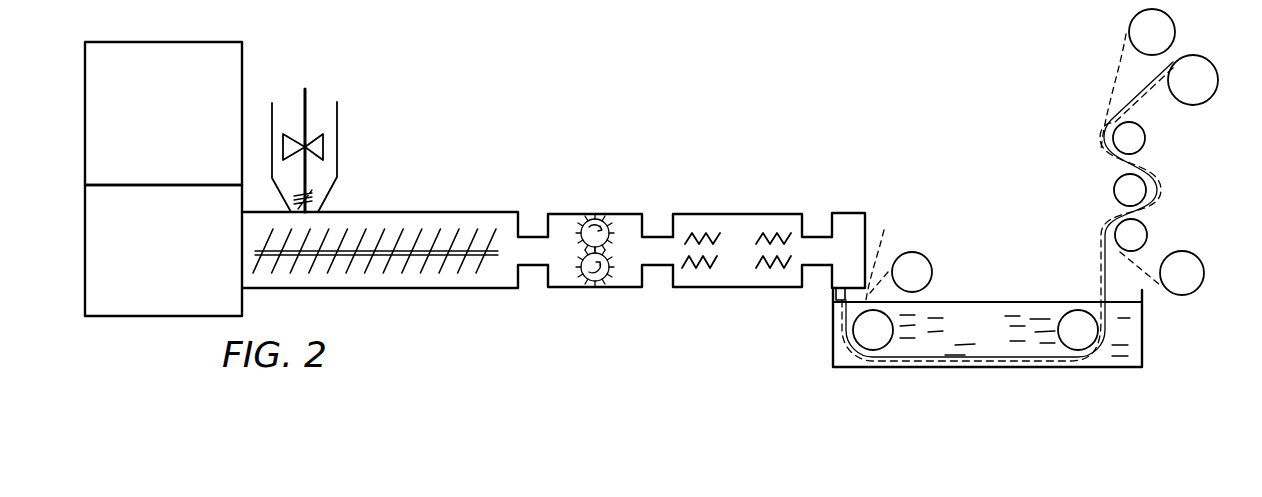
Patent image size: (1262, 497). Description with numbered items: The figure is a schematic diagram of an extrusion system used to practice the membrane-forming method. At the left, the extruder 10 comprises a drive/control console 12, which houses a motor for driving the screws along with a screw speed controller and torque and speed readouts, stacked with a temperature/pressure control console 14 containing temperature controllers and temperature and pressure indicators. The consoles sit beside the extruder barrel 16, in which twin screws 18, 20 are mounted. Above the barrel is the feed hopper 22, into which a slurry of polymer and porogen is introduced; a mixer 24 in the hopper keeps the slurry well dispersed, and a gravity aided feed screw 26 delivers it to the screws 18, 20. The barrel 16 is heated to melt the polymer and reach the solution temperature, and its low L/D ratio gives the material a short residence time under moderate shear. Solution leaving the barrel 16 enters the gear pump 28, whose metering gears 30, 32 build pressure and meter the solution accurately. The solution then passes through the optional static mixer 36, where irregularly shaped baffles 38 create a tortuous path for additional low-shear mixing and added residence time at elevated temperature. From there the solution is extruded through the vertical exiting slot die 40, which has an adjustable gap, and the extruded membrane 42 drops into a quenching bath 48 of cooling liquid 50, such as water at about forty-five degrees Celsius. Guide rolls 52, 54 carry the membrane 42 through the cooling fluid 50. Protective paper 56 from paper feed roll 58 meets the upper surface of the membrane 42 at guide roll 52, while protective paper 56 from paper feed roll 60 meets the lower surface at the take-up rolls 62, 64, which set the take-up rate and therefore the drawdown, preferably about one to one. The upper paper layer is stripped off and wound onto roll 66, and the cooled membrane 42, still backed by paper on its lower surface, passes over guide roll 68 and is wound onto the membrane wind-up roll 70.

The extruder 10 is at (420, 150).
The drive/control console 12 is at (144, 268).
The temperature/pressure control console 14 is at (149, 110).
The extruder barrel 16 is at (395, 288).
The twin screw 18 is at (403, 230).
The twin screw 20 is at (458, 232).
The feed hopper 22 is at (338, 131).
The mixer 24 is at (322, 150).
The feed screw 26 is at (322, 200).
The gear pump 28 is at (557, 288).
The metering gear 30 is at (607, 283).
The metering gear 32 is at (607, 225).
The static mixer 36 is at (697, 288).
The baffles 38 is at (758, 234).
The vertical exiting slot die 40 is at (831, 213).
The extruded membrane 42 is at (835, 292).
The quenching bath 48 is at (1135, 367).
The cooling liquid 50 is at (959, 337).
The guide roll 52 is at (848, 340).
The guide roll 54 is at (1078, 314).
The protective paper 56 is at (887, 257).
The paper feed roll 58 is at (932, 278).
The paper feed roll 60 is at (1198, 286).
The take-up roll 62 is at (1143, 238).
The take-up roll 64 is at (1113, 192).
The roll 66 is at (1132, 30).
The guide roll 68 is at (1142, 147).
The membrane wind-up roll 70 is at (1203, 100).